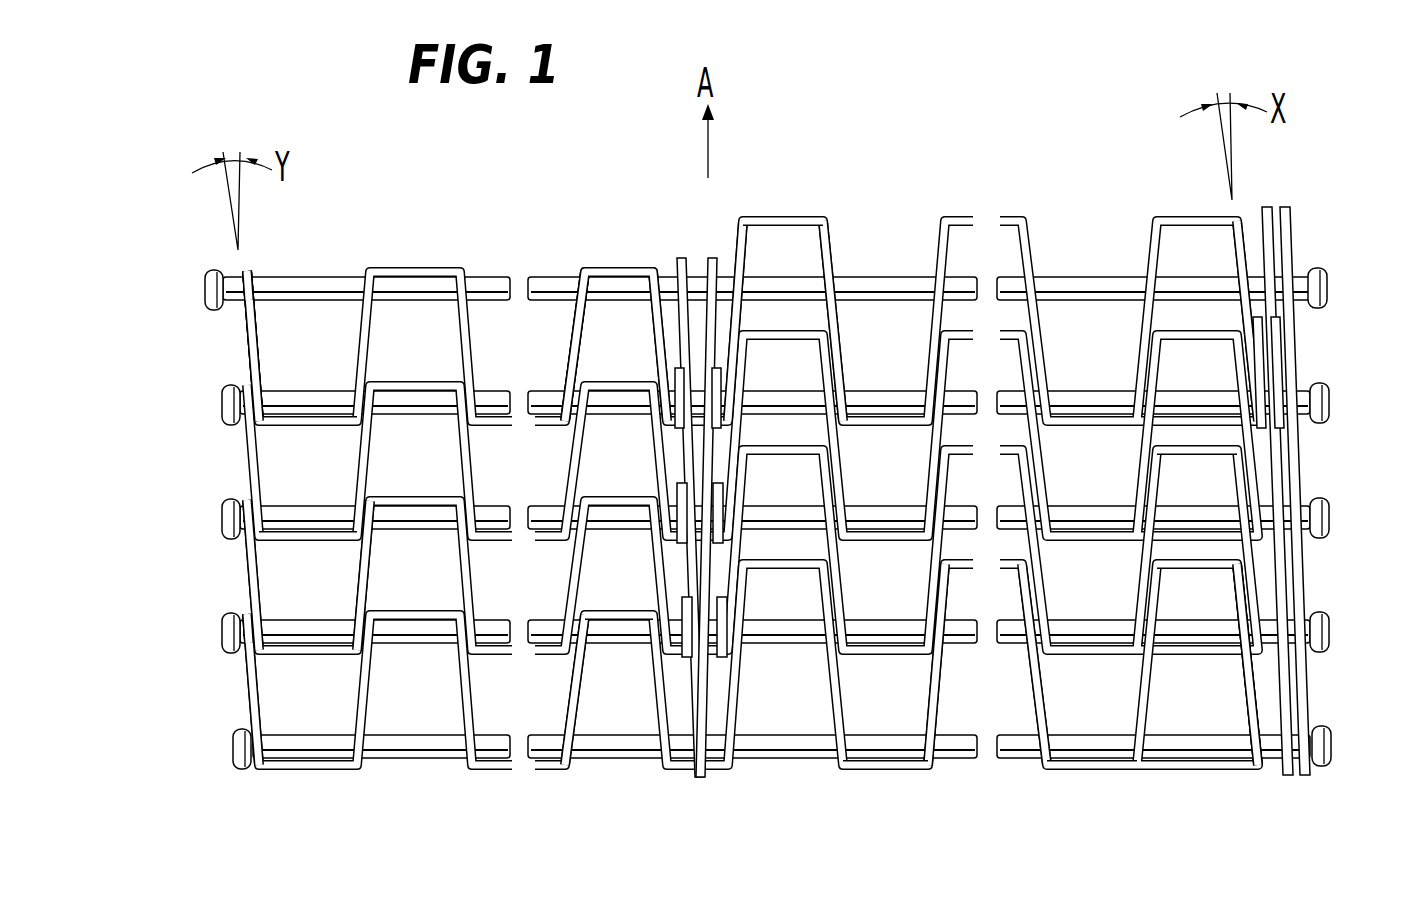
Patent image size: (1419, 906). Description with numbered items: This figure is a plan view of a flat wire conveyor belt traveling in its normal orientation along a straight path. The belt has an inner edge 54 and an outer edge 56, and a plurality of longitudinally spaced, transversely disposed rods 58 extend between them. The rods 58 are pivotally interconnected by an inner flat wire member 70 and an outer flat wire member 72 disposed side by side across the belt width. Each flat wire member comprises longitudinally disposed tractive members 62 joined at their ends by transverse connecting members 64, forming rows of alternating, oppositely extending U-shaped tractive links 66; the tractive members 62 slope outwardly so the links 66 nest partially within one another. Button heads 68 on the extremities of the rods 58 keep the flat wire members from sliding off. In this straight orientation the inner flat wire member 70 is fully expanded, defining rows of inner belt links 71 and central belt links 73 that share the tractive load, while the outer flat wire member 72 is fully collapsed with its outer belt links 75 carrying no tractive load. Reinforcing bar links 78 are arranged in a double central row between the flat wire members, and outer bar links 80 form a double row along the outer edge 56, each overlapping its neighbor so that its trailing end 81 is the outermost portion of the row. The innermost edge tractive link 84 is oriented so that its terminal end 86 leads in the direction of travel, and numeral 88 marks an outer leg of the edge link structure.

The inner edge 54 is at (232, 463).
The outer edge 56 is at (1316, 462).
The rods 58 is at (628, 765).
The tractive members 62 is at (262, 363).
The transverse connecting members 64 is at (333, 430).
The U-shaped tractive links 66 is at (230, 336).
The button heads 68 is at (210, 280).
The inner flat wire member 70 is at (608, 260).
The inner belt links 71 is at (257, 327).
The outer flat wire member 72 is at (1242, 205).
The central belt links 73 is at (665, 445).
The outer belt links 75 is at (1235, 305).
The reinforcing bar links 78 is at (699, 790).
The outer bar links 80 is at (1291, 198).
The trailing end 81 is at (1313, 430).
The innermost edge tractive link 84 is at (253, 568).
The terminal end 86 is at (250, 268).
The edge link leg 88 is at (1257, 713).